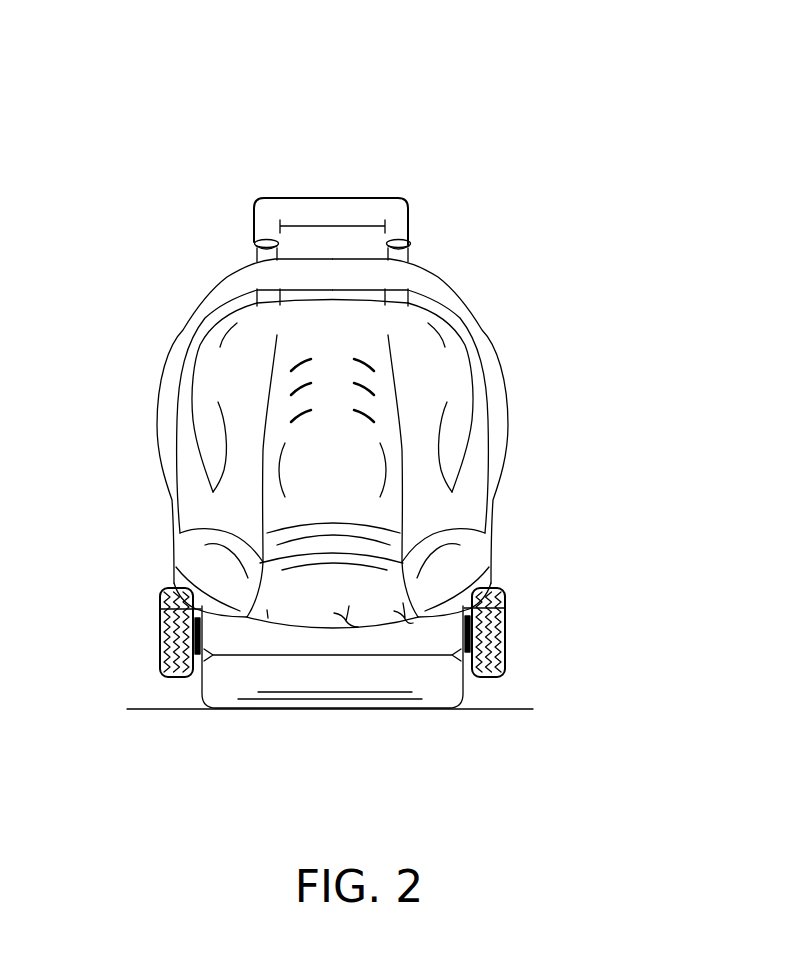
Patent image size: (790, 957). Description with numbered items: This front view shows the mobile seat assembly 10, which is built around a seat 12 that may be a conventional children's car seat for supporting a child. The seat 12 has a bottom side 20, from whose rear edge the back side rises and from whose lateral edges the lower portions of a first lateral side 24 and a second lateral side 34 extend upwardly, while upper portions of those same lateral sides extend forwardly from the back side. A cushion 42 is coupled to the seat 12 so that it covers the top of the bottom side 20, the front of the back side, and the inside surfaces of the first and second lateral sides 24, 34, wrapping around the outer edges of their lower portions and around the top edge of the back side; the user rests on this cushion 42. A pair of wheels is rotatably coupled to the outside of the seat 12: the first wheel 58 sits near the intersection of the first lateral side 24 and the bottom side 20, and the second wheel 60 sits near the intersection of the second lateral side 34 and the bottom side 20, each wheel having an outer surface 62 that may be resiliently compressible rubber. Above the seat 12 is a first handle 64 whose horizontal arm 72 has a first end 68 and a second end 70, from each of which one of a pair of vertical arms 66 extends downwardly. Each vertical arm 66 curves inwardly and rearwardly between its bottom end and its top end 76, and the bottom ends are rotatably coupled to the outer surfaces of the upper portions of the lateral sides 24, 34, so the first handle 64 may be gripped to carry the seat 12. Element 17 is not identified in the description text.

The mobile seat assembly 10 is at (554, 132).
The seat 12 is at (502, 577).
The base bottom portion 17 is at (413, 702).
The bottom side 20 is at (250, 708).
The first lateral side 24 is at (162, 601).
The second lateral side 34 is at (503, 606).
The cushion 42 is at (248, 385).
The first one of the pair of wheels 58 is at (162, 610).
The second one of the pair of wheels 60 is at (505, 647).
The outer surface 62 is at (170, 645).
The first handle 64 is at (442, 264).
The pair of vertical arms 66 is at (170, 388).
The first end 68 is at (231, 278).
The second end 70 is at (415, 265).
The horizontal arm 72 is at (335, 263).
The top end 76 is at (203, 302).